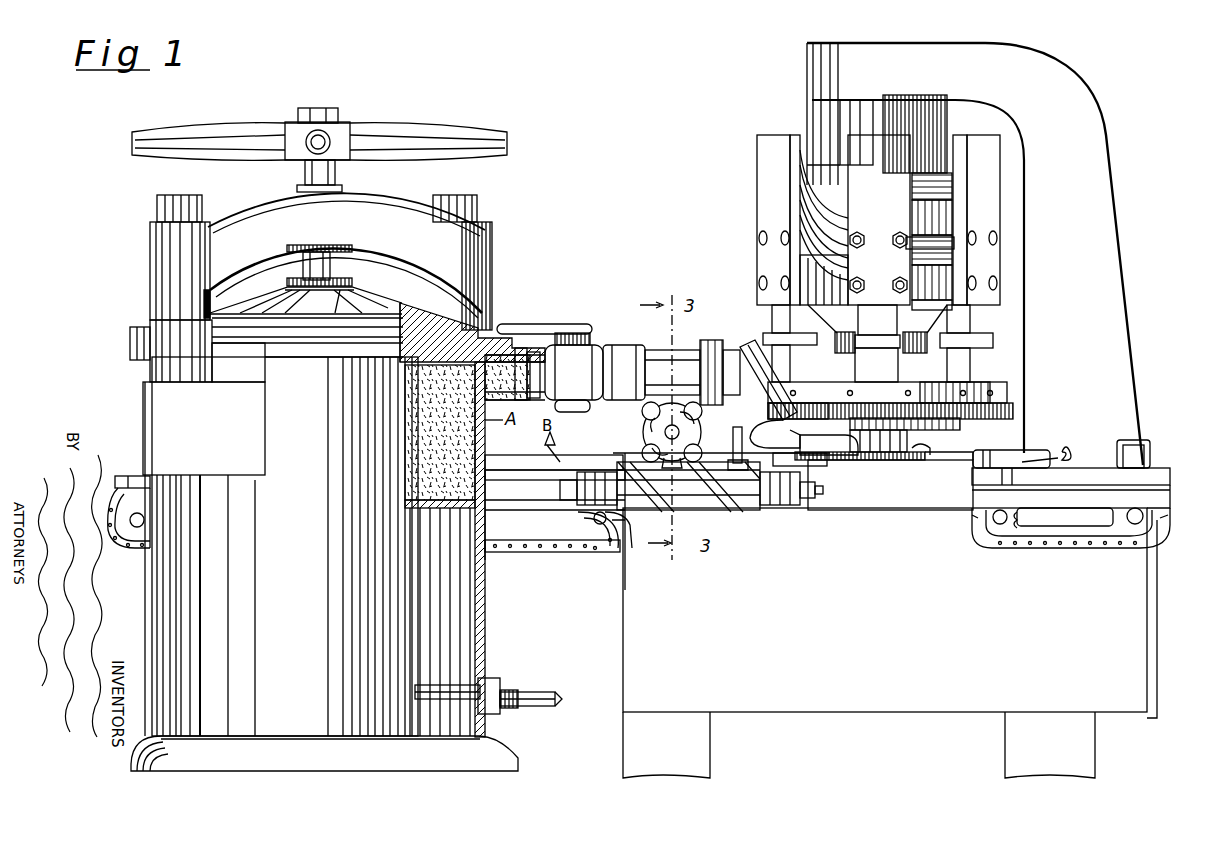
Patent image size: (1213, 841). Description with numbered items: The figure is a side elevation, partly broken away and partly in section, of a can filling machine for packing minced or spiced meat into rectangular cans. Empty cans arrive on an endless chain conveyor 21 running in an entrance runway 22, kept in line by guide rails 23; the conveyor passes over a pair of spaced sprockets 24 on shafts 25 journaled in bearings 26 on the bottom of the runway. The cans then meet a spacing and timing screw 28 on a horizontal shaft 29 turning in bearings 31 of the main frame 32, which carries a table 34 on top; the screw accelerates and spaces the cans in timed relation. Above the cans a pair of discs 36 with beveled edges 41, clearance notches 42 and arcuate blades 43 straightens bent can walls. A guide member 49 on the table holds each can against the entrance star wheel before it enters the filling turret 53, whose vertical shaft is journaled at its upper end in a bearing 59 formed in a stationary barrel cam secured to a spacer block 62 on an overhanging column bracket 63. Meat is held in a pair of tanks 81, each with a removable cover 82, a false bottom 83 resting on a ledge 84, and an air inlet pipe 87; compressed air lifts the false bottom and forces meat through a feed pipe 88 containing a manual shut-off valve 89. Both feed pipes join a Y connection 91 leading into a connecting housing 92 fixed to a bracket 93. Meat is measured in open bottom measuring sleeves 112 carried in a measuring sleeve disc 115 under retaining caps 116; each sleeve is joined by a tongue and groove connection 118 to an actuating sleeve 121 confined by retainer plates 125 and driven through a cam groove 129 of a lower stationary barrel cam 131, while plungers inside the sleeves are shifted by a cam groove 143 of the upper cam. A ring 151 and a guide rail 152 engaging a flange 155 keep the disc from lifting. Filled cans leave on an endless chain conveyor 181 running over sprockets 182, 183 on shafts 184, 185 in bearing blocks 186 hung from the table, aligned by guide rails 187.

The endless chain conveyor 21 is at (545, 552).
The entrance runway 22 is at (522, 492).
The guide rails 23 is at (522, 468).
The sprockets 24 is at (140, 550).
The shafts 25 is at (146, 520).
The bearings 26 is at (140, 503).
The spacing and timing screw 28 is at (735, 500).
The horizontal shaft 29 is at (810, 495).
The bearings 31 is at (620, 503).
The frame 32 is at (890, 643).
The table 34 is at (1040, 488).
The discs 36 is at (652, 434).
The beveled edges 41 is at (648, 444).
The clearance notches 42 is at (643, 428).
The arcuate blades 43 is at (664, 416).
The guide member 49 is at (864, 478).
The filling turret 53 is at (926, 450).
The bearing / stationary barrel cam 59 is at (935, 202).
The spacer block 62 is at (830, 118).
The overhanging column bracket 63 is at (975, 254).
The tanks 81 is at (324, 564).
The removable cover 82 is at (265, 309).
The false bottom 83 is at (432, 505).
The ledge 84 is at (468, 688).
The air inlet pipe 87 is at (525, 698).
The feed pipe 88 is at (578, 338).
The shut-off valve 89 is at (573, 375).
The Y connection 91 is at (655, 360).
The connecting housing 92 is at (752, 350).
The bracket 93 is at (716, 468).
The measuring sleeves 112 is at (978, 365).
The measuring sleeve disc 115 is at (940, 390).
The retaining caps 116 is at (796, 392).
The tongue and groove connection 118 is at (993, 342).
The actuating sleeve 121 is at (776, 322).
The retainer plates 125 is at (770, 190).
The cam groove 129 is at (818, 248).
The stationary barrel cam 131 is at (930, 248).
The cam groove 143 is at (852, 200).
The ring 151 is at (962, 425).
The guide rail 152 is at (805, 412).
The flange 155 is at (1012, 412).
The endless chain conveyor 181 is at (1062, 550).
The sprocket 182 is at (1026, 522).
The sprocket 183 is at (1125, 542).
The shaft 184 is at (988, 542).
The shaft 185 is at (1145, 525).
The bearing blocks 186 is at (975, 525).
The guide rails 187 is at (1120, 472).